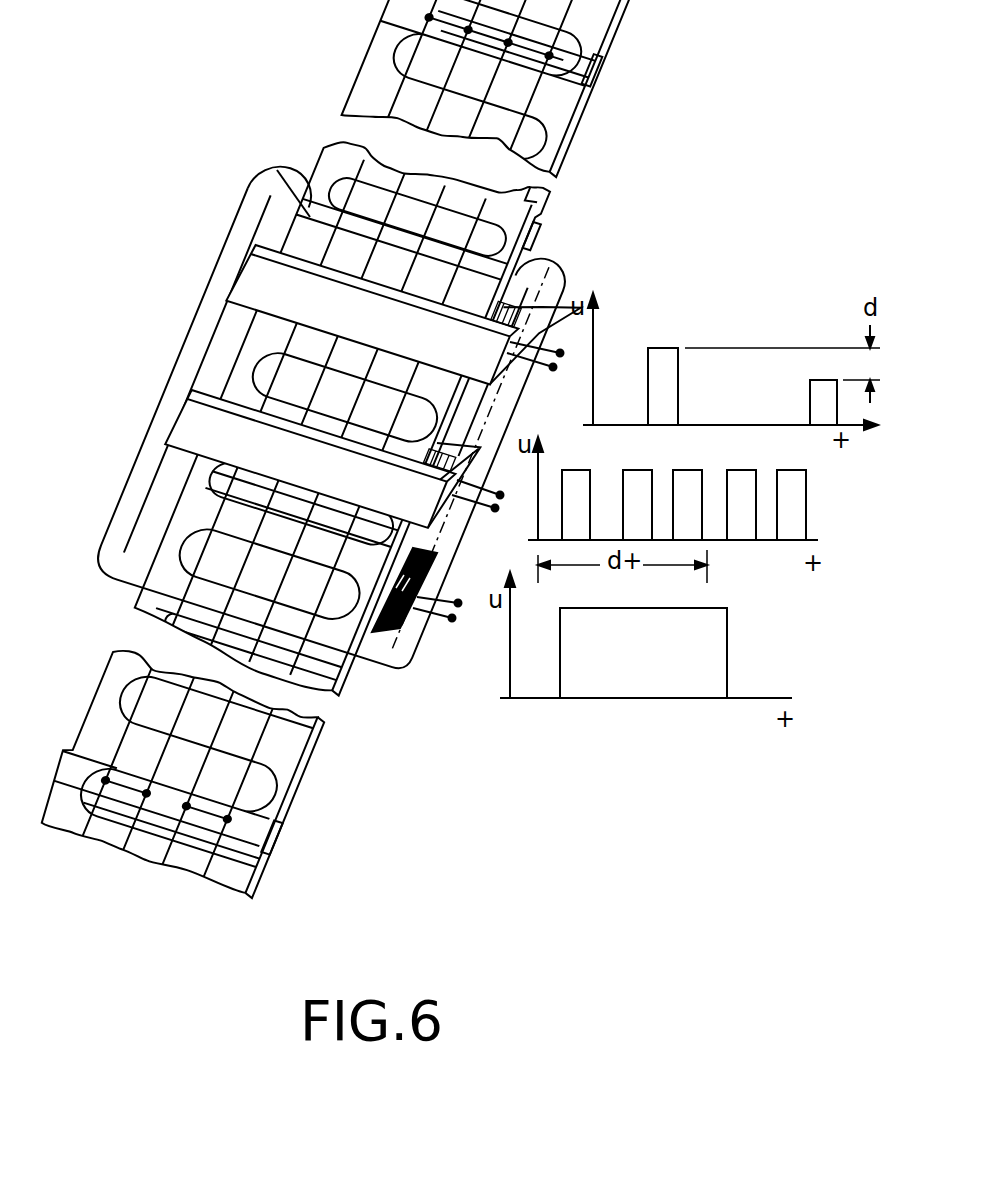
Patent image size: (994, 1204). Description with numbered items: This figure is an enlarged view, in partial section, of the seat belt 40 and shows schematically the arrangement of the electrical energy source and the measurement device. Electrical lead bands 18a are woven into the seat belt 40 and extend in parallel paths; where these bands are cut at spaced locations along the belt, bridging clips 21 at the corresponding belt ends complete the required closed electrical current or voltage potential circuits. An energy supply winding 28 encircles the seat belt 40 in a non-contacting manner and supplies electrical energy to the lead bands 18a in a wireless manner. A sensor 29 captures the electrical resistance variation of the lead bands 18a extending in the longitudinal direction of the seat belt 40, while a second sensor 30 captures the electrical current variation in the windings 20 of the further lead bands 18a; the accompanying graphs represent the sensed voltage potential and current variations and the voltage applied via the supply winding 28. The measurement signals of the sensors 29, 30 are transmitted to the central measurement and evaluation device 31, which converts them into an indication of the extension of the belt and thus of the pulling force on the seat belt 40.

The electrical lead bands 18a is at (493, 198).
The windings 20 is at (337, 180).
The bridging clips 21 is at (596, 58).
The energy supply winding 28 is at (362, 613).
The sensor 29 is at (250, 285).
The second sensor 30 is at (183, 422).
The central measurement and evaluation device 31 is at (268, 183).
The seat belt 40 is at (317, 735).